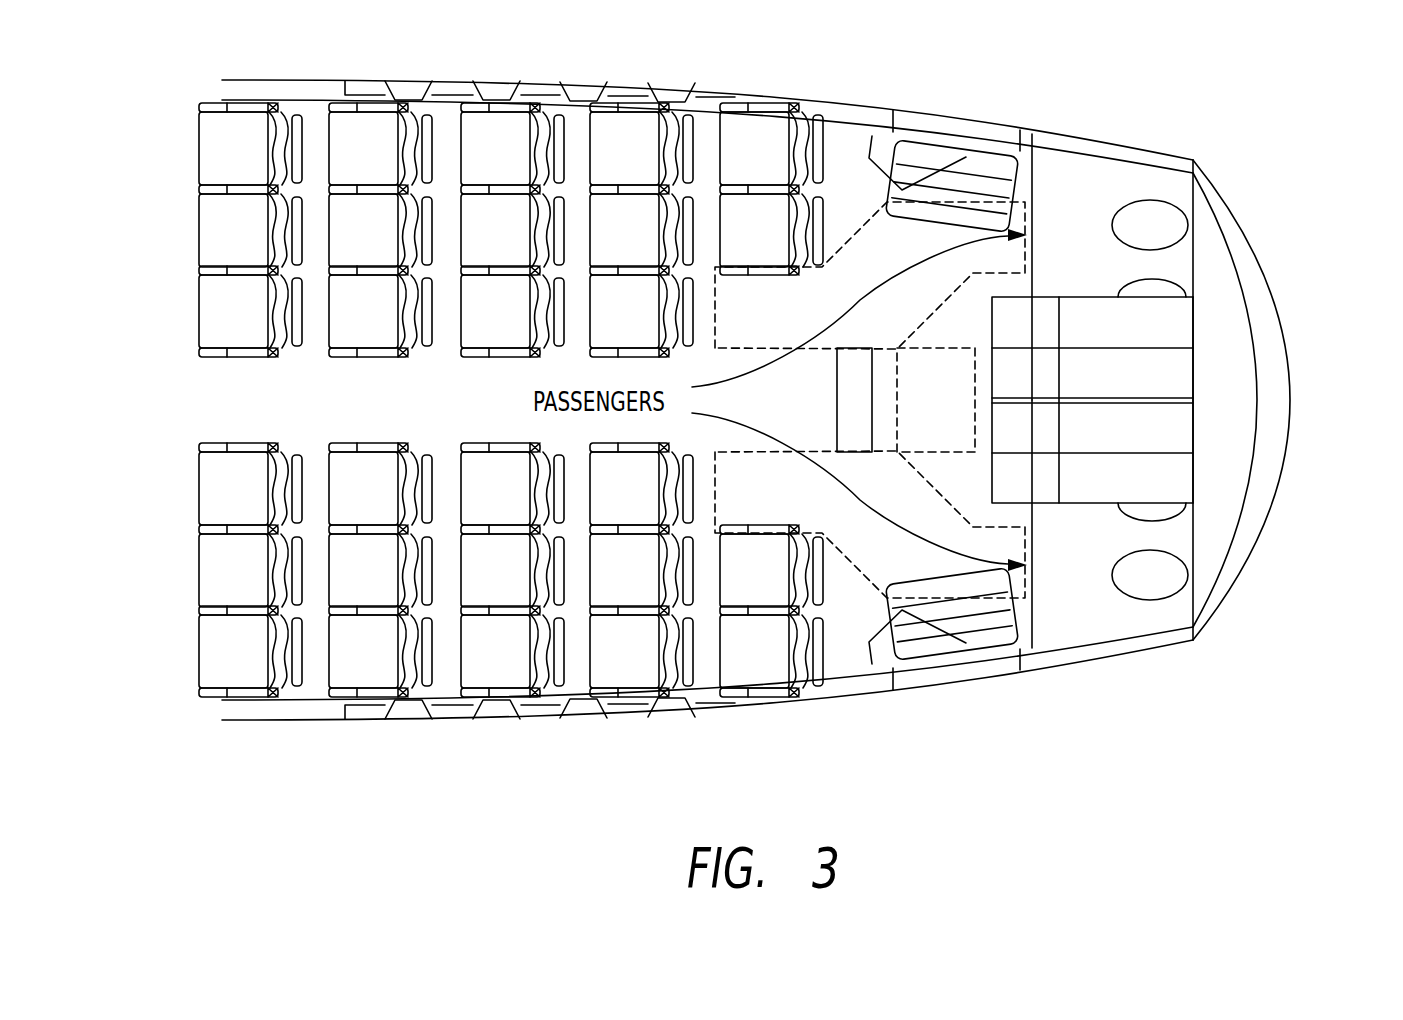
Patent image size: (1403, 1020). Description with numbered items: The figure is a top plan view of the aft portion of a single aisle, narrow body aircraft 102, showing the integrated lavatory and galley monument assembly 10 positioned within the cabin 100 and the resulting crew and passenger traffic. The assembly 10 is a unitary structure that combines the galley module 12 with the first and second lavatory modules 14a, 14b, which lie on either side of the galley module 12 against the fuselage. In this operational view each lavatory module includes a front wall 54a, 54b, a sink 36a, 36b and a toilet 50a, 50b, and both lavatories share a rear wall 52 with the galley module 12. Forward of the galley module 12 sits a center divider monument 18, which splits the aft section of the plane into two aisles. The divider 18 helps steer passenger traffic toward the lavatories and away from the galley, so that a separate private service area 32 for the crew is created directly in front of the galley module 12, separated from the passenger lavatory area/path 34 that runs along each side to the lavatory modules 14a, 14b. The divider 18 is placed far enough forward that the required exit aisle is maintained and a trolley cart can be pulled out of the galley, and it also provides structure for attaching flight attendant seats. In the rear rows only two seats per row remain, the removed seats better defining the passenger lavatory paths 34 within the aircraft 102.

The integrated lavatory and galley monument assembly 10 is at (1262, 154).
The cabin 100 is at (1287, 400).
The aircraft 102 is at (322, 419).
The galley module 12 is at (1173, 370).
The first lavatory module 14a is at (1148, 185).
The second lavatory module 14b is at (1148, 615).
The center divider monument 18 is at (872, 400).
The private service area 32 is at (957, 412).
The passenger lavatory area/path 34 is at (870, 287).
The sink 36a is at (1170, 288).
The sink 36b is at (1170, 512).
The toilet 50a is at (1147, 225).
The toilet 50b is at (1147, 575).
The rear wall 52 is at (1195, 430).
The front wall 54a is at (1033, 188).
The front wall 54b is at (1033, 608).